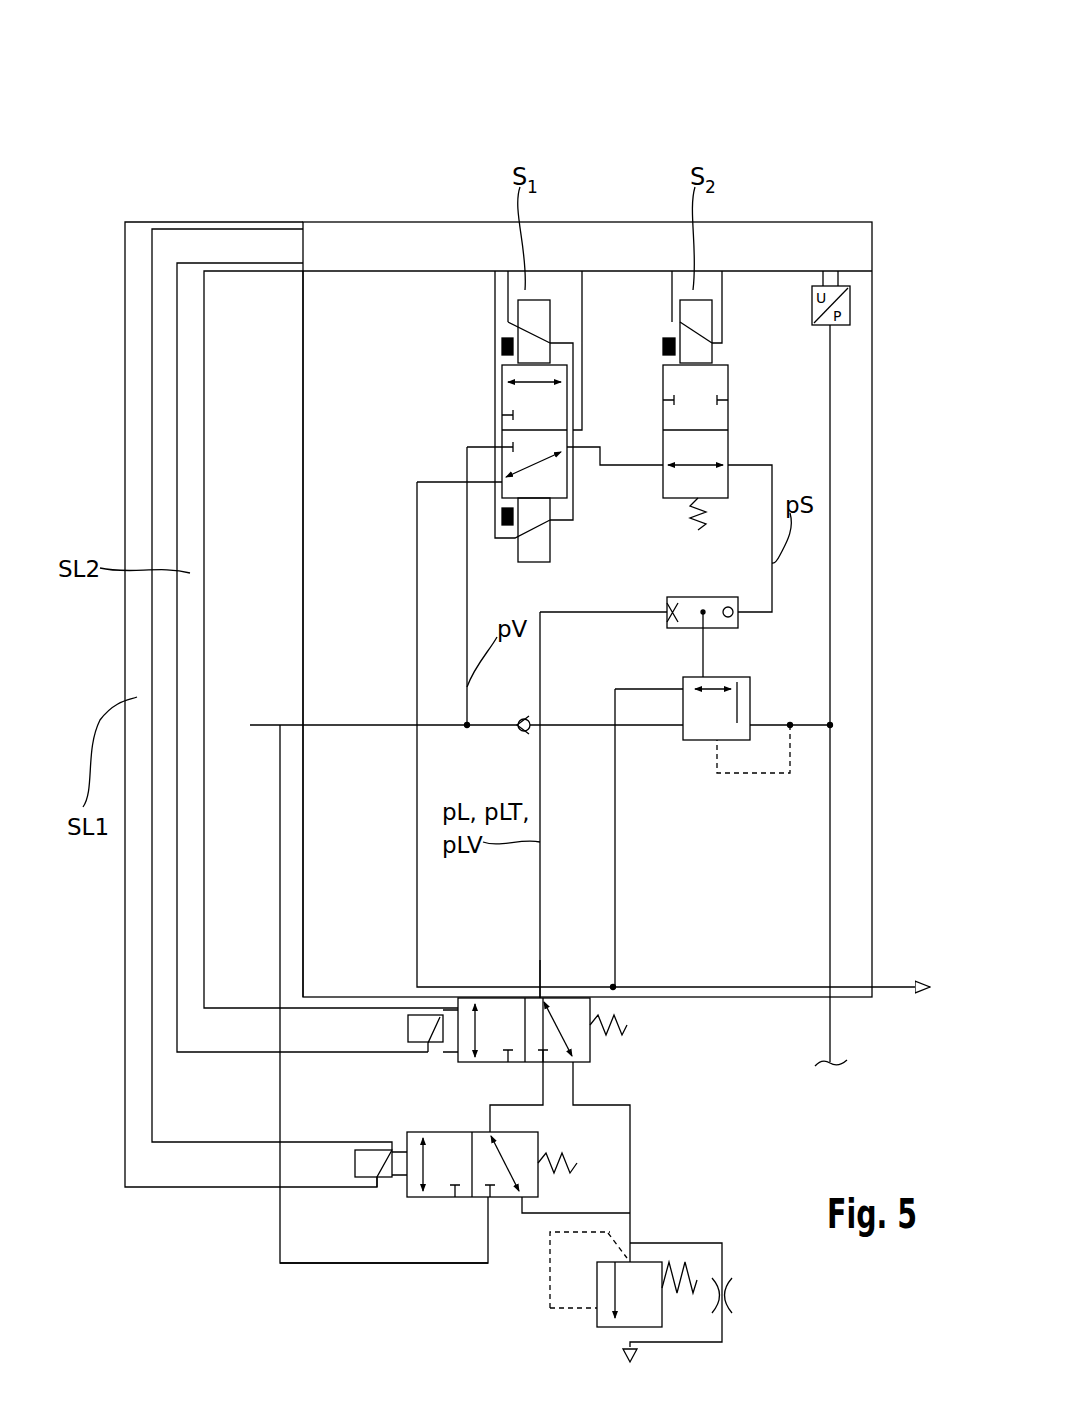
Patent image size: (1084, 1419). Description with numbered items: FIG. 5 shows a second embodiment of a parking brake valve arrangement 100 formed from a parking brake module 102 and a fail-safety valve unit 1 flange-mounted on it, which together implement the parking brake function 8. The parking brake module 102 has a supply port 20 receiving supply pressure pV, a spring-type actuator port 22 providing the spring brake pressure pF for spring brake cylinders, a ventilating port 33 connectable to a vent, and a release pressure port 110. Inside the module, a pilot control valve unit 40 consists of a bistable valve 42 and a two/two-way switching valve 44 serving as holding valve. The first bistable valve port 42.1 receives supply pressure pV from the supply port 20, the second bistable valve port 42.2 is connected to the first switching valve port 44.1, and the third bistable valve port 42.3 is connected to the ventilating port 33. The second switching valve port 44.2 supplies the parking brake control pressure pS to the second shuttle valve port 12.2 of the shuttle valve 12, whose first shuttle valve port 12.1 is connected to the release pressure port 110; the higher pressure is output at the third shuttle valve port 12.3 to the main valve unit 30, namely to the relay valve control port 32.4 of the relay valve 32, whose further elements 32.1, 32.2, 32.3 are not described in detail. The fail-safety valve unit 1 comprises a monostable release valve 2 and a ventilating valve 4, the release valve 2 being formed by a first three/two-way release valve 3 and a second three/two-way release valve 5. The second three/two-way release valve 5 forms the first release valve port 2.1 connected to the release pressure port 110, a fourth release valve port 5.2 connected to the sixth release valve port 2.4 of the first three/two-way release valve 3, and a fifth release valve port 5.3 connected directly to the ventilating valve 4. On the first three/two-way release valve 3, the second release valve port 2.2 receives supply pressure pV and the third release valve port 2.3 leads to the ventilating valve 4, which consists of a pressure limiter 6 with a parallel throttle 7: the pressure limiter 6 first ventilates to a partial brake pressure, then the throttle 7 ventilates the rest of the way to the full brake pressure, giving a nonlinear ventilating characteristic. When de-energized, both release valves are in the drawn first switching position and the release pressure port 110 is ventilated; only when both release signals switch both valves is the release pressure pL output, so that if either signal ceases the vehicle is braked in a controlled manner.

The parking brake valve arrangement 100 is at (222, 108).
The parking brake function 8 is at (348, 210).
The parking brake module 102 is at (303, 428).
The pilot control valve unit 40 is at (672, 432).
The bistable valve 42 is at (524, 416).
The first bistable valve port 42.1 is at (500, 445).
The second bistable valve port 42.2 is at (562, 450).
The third bistable valve port 42.3 is at (500, 482).
The 2/2-way switching valve 44 is at (739, 400).
The first switching valve port 44.1 is at (663, 465).
The second switching valve port 44.2 is at (730, 462).
The shuttle valve 12 is at (685, 611).
The first shuttle valve port 12.1 is at (668, 605).
The second shuttle valve port 12.2 is at (737, 607).
The third shuttle valve port 12.3 is at (705, 628).
The main valve unit 30 is at (769, 812).
The relay valve 32 is at (709, 812).
The control port of relay valve 32.1 is at (683, 740).
The outlet of relay valve 32.2 is at (750, 716).
The supply port of relay valve 32.3 is at (683, 682).
The relay valve control port 32.4 is at (700, 670).
The supply port 20 is at (245, 750).
The ventilating port 33 is at (873, 987).
The spring-type actuator port 22 is at (832, 997).
The release pressure port 110 is at (539, 988).
The first release valve port 2.1 is at (544, 996).
The second 3/2-way release valve 5 is at (541, 1051).
The fourth release valve port 5.2 is at (540, 1064).
The fifth release valve port 5.3 is at (573, 1064).
The release valve 2 is at (537, 1172).
The second release valve port 2.2 is at (490, 1195).
The third release valve port 2.3 is at (520, 1197).
The sixth release valve port 2.4 is at (490, 1133).
The first 3/2-way release valve 3 is at (413, 1197).
The ventilating valve 4 is at (632, 1311).
The pressure limiter 6 is at (597, 1315).
The throttle 7 is at (727, 1295).
The fail-safety valve unit 1 is at (388, 1337).